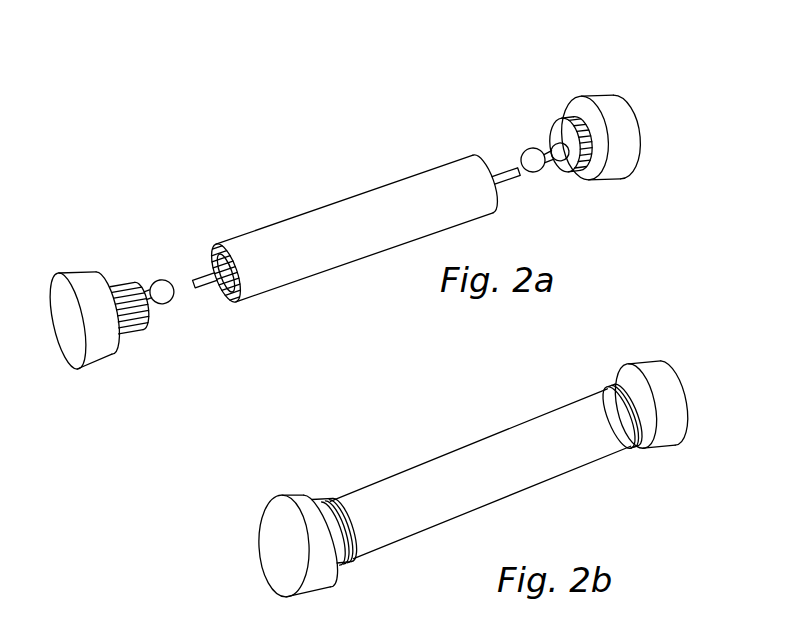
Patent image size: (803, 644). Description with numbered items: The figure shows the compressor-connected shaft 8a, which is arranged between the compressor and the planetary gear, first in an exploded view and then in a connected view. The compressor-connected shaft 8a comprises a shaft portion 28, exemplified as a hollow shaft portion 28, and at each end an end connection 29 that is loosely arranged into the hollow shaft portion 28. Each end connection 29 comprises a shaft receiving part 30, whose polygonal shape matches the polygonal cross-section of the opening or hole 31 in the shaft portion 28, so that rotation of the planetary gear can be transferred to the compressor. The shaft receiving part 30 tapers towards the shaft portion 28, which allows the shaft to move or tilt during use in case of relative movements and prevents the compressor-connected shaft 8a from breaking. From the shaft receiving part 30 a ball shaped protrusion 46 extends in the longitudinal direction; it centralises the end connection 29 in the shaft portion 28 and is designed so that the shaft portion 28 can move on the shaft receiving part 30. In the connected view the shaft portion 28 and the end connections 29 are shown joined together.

In FIG. 2A, the compressor-connected shaft 8a is at (345, 141).
In FIG. 2B, the compressor-connected shaft 8a is at (572, 480).
In FIG. 2A, the shaft portion 28 is at (405, 198).
In FIG. 2B, the shaft portion 28 is at (442, 470).
In FIG. 2A, the end connection 29 is at (73, 273).
In FIG. 2B, the end connection 29 is at (292, 511).
In FIG. 2A, the shaft receiving part 30 is at (118, 280).
In FIG. 2B, the shaft receiving part 30 is at (333, 500).
In FIG. 2A, the opening/hole 31 is at (196, 256).
In FIG. 2A, the ball shaped protrusion 46 is at (172, 303).